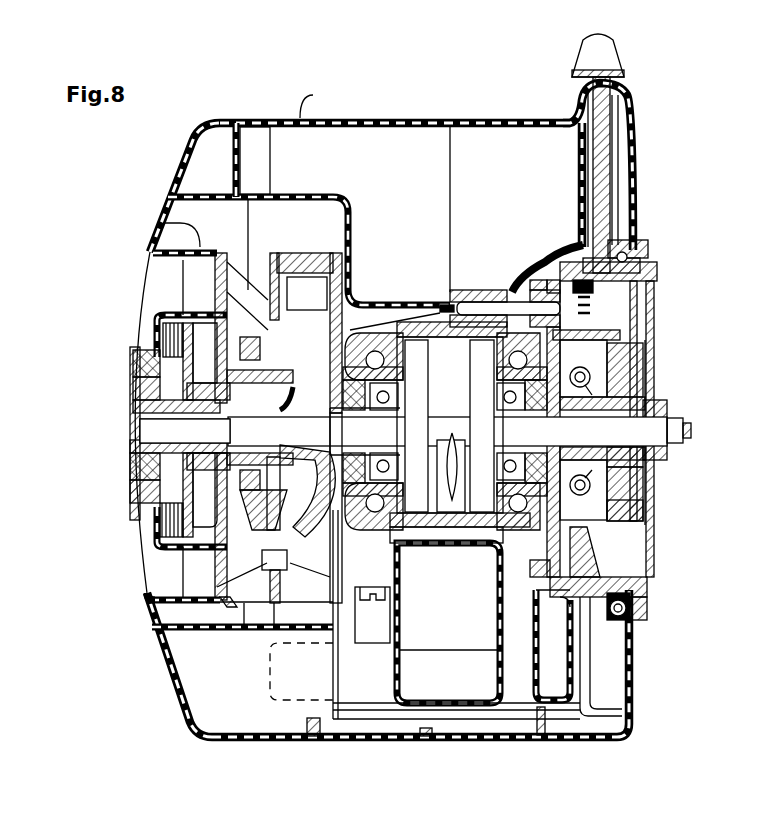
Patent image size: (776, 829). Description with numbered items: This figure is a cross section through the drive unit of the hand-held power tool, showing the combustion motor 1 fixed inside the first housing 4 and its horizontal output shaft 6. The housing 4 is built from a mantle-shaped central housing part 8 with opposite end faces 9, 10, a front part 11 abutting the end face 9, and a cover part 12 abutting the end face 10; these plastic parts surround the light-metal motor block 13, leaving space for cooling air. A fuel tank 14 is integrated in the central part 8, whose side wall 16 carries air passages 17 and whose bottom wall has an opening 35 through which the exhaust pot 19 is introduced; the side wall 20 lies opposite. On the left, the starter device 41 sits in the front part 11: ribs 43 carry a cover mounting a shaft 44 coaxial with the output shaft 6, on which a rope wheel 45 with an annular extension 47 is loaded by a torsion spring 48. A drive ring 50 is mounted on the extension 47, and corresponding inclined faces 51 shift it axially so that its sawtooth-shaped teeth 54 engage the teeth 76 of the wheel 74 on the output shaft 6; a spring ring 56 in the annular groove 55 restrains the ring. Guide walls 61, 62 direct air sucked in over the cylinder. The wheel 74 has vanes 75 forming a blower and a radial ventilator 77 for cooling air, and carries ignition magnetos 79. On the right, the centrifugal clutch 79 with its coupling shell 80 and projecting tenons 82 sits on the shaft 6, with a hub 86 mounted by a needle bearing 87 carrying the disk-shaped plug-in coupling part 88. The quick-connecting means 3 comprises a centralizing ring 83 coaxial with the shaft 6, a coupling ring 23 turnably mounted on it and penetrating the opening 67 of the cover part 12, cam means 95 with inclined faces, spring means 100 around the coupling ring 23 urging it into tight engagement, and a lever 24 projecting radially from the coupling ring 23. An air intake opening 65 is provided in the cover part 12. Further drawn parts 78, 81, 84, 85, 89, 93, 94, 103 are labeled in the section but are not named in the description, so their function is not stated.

The combustion motor 1 is at (600, 710).
The quick-connecting means 3 is at (655, 550).
The first housing 4 is at (148, 643).
The output shaft 6 is at (677, 440).
The central housing part 8 is at (270, 710).
The end face 9 is at (197, 657).
The end face 10 is at (597, 700).
The front part 11 is at (152, 637).
The cover part 12 is at (628, 692).
The motor block 13 is at (397, 318).
The fuel tank 14 is at (583, 168).
The side wall 16 is at (493, 740).
The air passages 17 is at (380, 737).
The exhaust pot 19 is at (390, 663).
The side wall 20 is at (313, 118).
The coupling ring 23 is at (653, 268).
The lever 24 is at (606, 138).
The opening 35 is at (355, 670).
The starter device 41 is at (163, 547).
The ribs 43 is at (157, 288).
The shaft 44 is at (150, 423).
The rope wheel 45 is at (133, 480).
The annular extension 47 is at (160, 490).
The torsion spring 48 is at (167, 553).
The drive ring 50 is at (240, 333).
The inclined faces 51 is at (137, 387).
The sawtooth-shaped teeth 54 is at (213, 570).
The annular groove 55 is at (165, 318).
The spring ring 56 is at (172, 342).
The guide wall 61 is at (217, 287).
The guide wall 62 is at (163, 225).
The air intake opening 65 is at (629, 660).
The opening 67 is at (647, 247).
The wheel 74 is at (165, 515).
The vanes 75 is at (255, 635).
The teeth 76 is at (140, 526).
The radial ventilator 77 is at (222, 605).
The crankcase 78 is at (325, 290).
The centrifugal clutch 79 is at (647, 380).
The coupling shell 80 is at (620, 353).
The clutch hub 81 is at (625, 370).
The tenons 82 is at (650, 378).
The centralizing ring 83 is at (620, 337).
The plate 84 is at (593, 317).
The base plate 85 is at (650, 587).
The hub 86 is at (667, 397).
The needle bearing 87 is at (667, 423).
The plug-in coupling part 88 is at (647, 477).
The bearing 89 is at (653, 510).
The support 93 is at (560, 620).
The wall 94 is at (653, 273).
The cam means 95 is at (647, 287).
The spring means 100 is at (632, 612).
The snap ring 103 is at (590, 310).